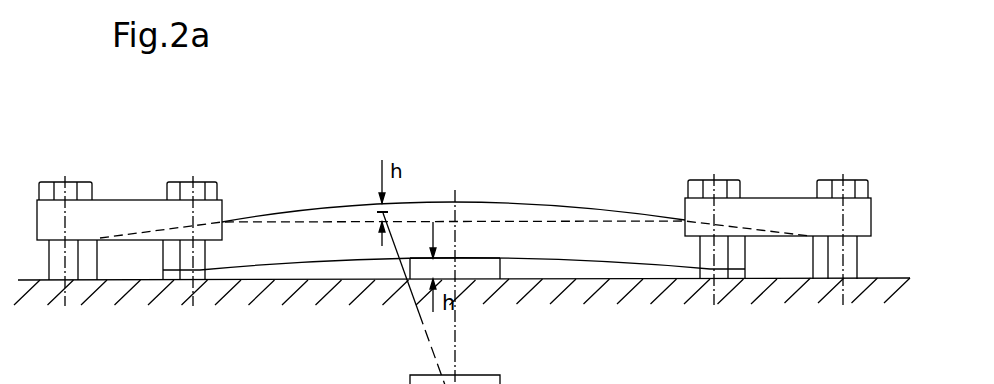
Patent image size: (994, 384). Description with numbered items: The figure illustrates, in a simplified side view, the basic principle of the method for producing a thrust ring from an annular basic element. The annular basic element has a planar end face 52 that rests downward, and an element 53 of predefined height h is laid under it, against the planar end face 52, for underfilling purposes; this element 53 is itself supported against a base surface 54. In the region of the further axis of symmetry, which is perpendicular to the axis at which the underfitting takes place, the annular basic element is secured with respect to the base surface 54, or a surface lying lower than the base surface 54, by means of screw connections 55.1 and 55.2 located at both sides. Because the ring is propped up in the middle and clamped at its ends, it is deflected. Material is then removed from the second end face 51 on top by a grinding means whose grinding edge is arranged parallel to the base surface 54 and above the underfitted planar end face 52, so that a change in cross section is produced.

The second end face 51 is at (310, 208).
The planar end face 52 is at (308, 262).
The element of predefined height 53 is at (478, 270).
The base surface 54 is at (892, 277).
The screw connection 55.1 is at (772, 182).
The screw connection 55.2 is at (135, 187).